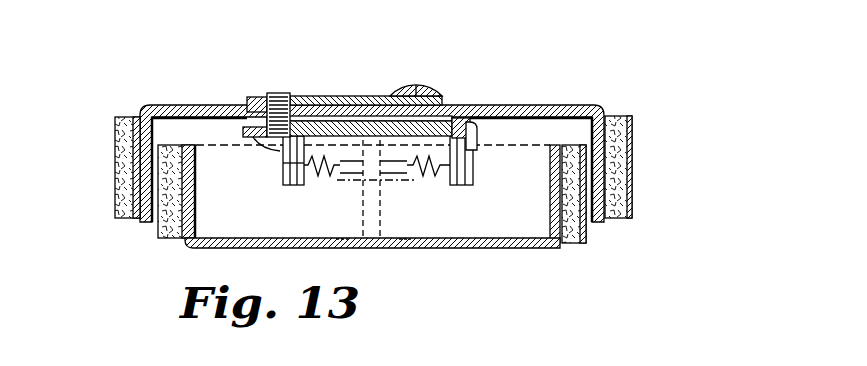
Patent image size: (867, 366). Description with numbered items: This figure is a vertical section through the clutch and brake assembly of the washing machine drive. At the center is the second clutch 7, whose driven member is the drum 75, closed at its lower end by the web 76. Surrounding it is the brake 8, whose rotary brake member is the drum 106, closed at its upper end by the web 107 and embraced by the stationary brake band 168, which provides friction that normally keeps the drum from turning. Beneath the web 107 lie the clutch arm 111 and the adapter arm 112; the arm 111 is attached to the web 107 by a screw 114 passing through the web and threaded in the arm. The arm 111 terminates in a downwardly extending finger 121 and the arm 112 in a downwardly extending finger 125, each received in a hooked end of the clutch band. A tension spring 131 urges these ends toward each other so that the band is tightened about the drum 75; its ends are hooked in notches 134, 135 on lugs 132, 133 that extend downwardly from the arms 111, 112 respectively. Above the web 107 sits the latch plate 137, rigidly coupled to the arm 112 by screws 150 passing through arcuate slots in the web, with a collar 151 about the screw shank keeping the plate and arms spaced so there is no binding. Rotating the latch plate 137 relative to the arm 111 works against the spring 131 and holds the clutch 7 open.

The second clutch 7 is at (592, 244).
The brake 8 is at (633, 168).
The driven member or drum 75 is at (548, 250).
The web 76 is at (447, 250).
The rotary brake member or drum 106 is at (135, 218).
The web 107 is at (566, 108).
The clutch arm 111 is at (452, 117).
The adapter arm 112 is at (250, 128).
The screw 114 is at (420, 86).
The finger 121 is at (405, 250).
The finger 125 is at (342, 248).
The tension spring 131 is at (349, 180).
The lug 132 is at (460, 183).
The lug 133 is at (285, 186).
The notch 134 is at (470, 165).
The notch 135 is at (282, 167).
The latch plate 137 is at (358, 97).
The screws 150 is at (283, 93).
The collar 151 is at (258, 96).
The stationary brake band 168 is at (118, 188).